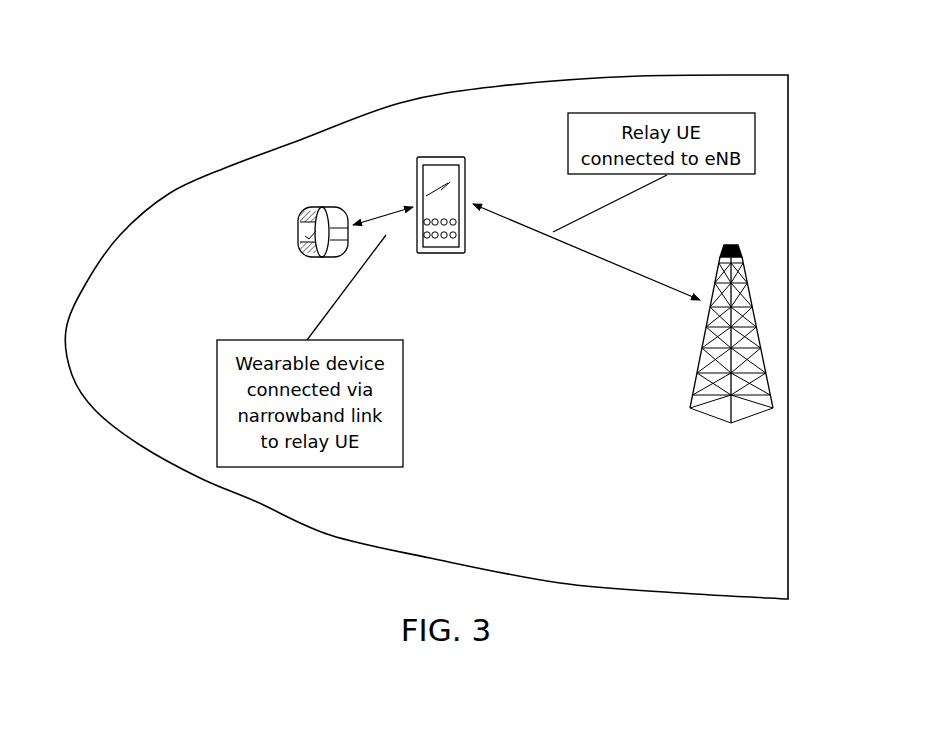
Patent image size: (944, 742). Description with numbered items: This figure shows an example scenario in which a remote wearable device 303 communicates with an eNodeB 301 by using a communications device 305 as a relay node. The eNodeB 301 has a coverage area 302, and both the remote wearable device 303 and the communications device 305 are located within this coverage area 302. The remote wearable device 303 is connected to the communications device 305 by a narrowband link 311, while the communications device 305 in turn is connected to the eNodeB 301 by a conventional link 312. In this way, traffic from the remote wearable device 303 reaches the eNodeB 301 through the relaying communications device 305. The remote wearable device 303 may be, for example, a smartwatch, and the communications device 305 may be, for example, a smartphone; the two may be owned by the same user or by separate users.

The eNodeB 301 is at (762, 323).
The coverage area 302 is at (722, 75).
The remote wearable device 303 is at (318, 208).
The communications device 305 is at (441, 254).
The narrowband link 311 is at (388, 217).
The conventional link 312 is at (607, 262).